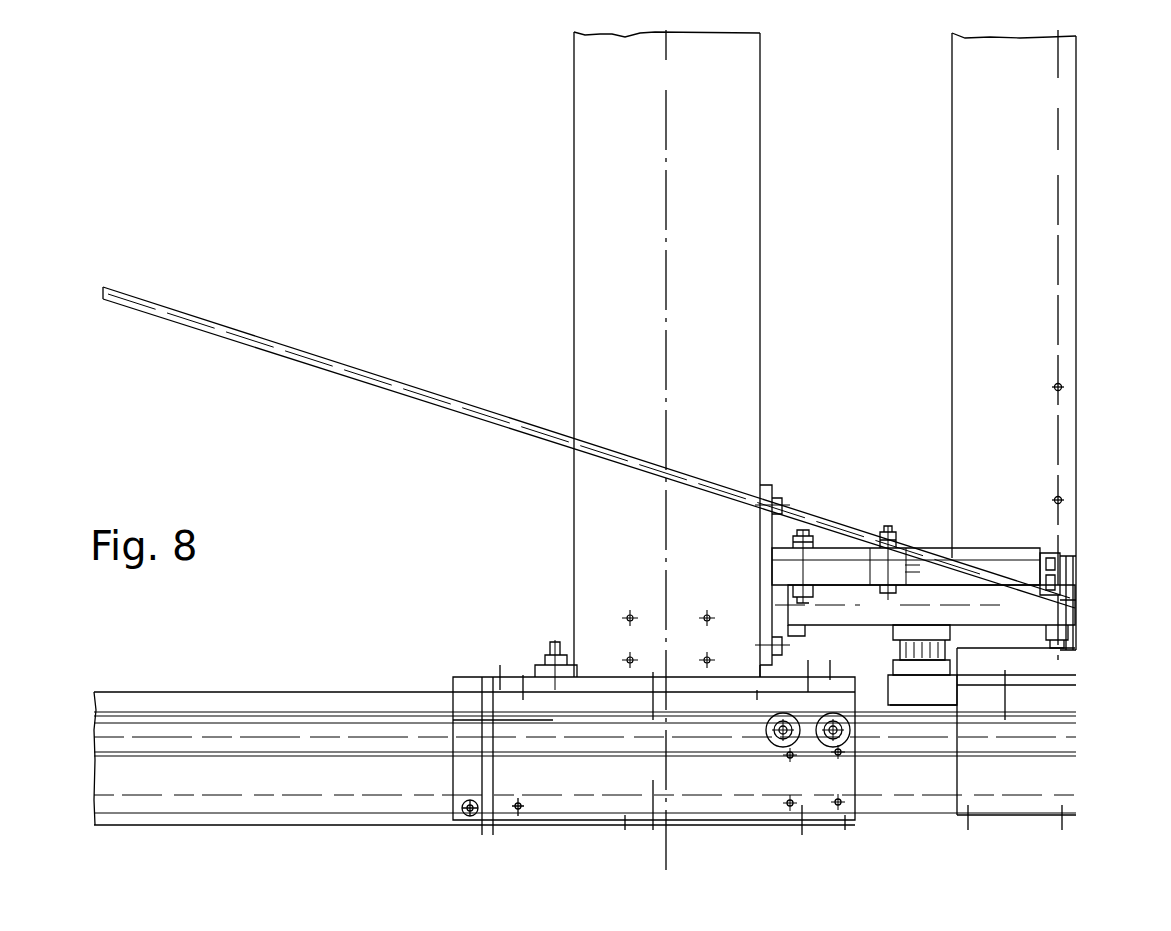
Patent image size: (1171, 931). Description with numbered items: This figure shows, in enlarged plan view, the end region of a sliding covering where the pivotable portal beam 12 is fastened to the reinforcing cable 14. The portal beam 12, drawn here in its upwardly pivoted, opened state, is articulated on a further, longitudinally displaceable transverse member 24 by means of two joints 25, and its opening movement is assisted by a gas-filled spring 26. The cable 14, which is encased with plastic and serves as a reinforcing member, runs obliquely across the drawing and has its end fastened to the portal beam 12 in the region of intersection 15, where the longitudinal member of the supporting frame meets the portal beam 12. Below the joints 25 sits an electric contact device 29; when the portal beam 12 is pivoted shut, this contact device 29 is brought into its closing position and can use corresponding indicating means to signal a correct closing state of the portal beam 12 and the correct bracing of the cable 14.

The transverse member 24 is at (632, 277).
The portal beam 12 is at (978, 265).
The cable 14 is at (462, 400).
The gas-filled spring 26 is at (1008, 558).
The joints 25 is at (835, 618).
The region of intersection 15 is at (1078, 595).
The electric contact device 29 is at (955, 650).